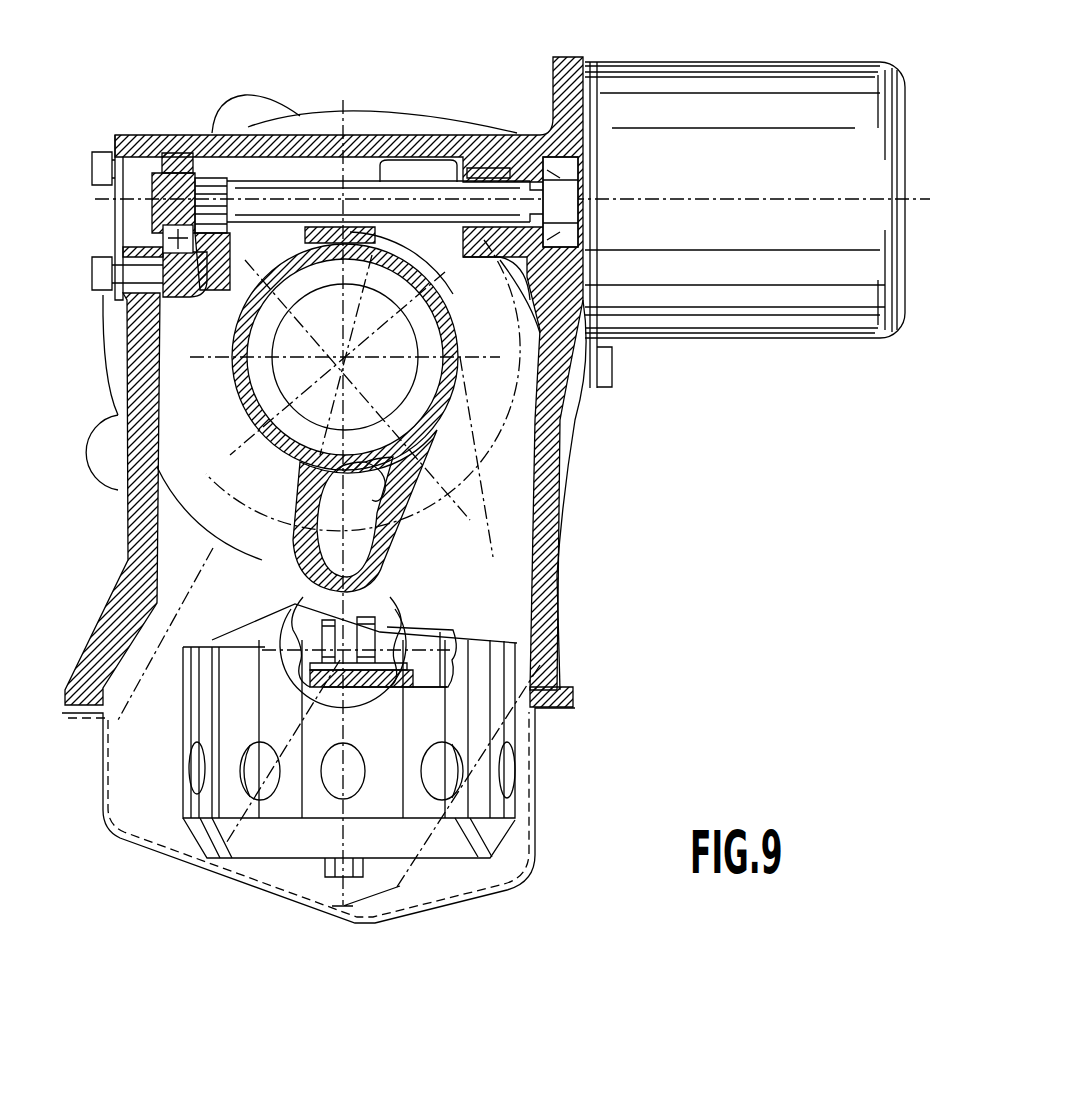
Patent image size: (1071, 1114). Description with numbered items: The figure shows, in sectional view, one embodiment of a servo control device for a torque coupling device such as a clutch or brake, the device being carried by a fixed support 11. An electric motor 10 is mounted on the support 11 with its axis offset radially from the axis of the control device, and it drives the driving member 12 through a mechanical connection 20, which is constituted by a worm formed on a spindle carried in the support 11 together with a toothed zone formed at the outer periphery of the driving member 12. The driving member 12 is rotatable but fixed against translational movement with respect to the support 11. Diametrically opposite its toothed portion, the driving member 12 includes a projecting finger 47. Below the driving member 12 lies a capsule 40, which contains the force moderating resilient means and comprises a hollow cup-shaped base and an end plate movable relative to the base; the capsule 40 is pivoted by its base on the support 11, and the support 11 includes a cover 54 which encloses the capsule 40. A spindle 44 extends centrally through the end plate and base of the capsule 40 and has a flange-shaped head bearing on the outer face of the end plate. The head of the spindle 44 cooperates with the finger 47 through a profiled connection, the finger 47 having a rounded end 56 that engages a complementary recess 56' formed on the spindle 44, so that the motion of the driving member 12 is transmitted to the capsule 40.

The electric motor 10 is at (715, 93).
The fixed support 11 is at (518, 115).
The driving member 12 is at (243, 437).
The mechanical connection 20 is at (385, 152).
The capsule 40 is at (267, 870).
The spindle 44 is at (387, 630).
The projecting finger 47 is at (293, 506).
The cover 54 is at (538, 845).
The rounded end 56 is at (306, 636).
The complementary recess 56' is at (312, 644).